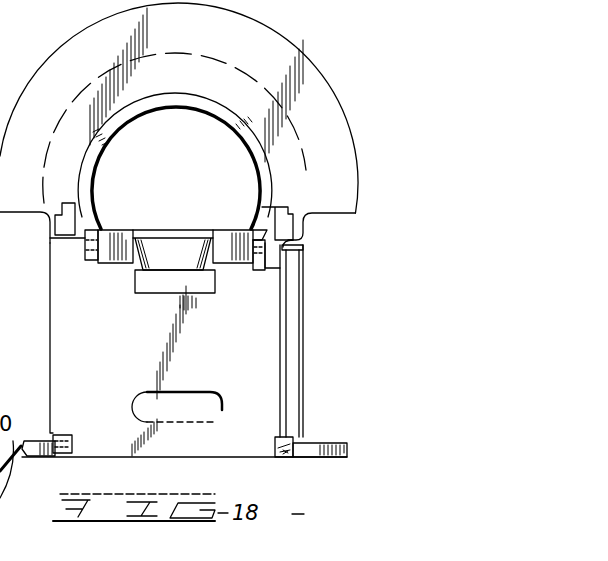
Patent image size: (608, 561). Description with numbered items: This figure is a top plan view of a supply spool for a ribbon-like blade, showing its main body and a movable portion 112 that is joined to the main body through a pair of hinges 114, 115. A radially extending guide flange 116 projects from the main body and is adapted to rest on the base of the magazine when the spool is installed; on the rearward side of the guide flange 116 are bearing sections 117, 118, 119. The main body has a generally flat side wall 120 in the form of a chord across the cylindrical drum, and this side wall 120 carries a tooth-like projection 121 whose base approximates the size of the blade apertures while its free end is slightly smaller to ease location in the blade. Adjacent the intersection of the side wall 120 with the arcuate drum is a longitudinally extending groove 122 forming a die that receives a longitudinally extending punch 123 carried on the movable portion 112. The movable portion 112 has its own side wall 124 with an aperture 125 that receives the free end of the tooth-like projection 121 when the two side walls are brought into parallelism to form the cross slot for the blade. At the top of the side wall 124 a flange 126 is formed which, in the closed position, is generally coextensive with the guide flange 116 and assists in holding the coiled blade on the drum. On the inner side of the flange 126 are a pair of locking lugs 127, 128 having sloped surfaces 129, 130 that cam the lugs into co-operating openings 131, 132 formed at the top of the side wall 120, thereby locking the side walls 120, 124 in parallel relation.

The movable portion 112 is at (66, 314).
The hinge 114 is at (118, 257).
The hinge 115 is at (213, 242).
The guide flange 116 is at (264, 40).
The bearing section 117 is at (203, 102).
The bearing section 118 is at (118, 218).
The bearing section 119 is at (229, 233).
The side wall 120 is at (88, 246).
The tooth-like projection 121 is at (193, 263).
The groove 122 is at (303, 248).
The punch 123 is at (284, 333).
The side wall 124 is at (268, 360).
The aperture 125 is at (215, 414).
The flange 126 is at (311, 450).
The locking lug 127 is at (58, 447).
The locking lug 128 is at (291, 454).
The sloped surface 129 is at (60, 444).
The sloped surface 130 is at (294, 447).
The opening 131 is at (58, 216).
The opening 132 is at (293, 214).